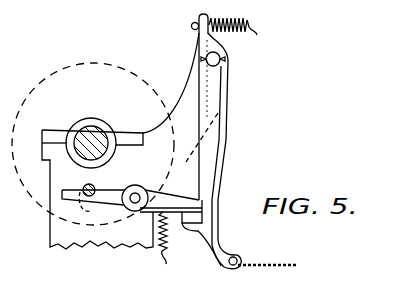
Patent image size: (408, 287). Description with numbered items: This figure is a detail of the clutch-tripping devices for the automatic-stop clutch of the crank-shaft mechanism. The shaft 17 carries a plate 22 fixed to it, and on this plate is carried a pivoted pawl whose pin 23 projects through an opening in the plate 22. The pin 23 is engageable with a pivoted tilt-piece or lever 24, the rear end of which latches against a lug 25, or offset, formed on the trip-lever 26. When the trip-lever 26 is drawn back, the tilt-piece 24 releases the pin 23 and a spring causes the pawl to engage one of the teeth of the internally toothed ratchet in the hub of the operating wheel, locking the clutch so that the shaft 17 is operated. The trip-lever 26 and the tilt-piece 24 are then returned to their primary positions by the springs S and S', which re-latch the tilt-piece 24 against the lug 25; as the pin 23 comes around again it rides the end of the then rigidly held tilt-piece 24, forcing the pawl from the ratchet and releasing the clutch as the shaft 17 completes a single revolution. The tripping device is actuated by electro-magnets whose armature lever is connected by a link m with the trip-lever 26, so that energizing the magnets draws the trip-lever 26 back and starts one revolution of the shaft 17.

The shaft 17 is at (80, 130).
The plate 22 is at (84, 67).
The pin 23 is at (95, 188).
The tilt-piece 24 is at (113, 206).
The lug 25 is at (200, 197).
The trip-lever 26 is at (214, 148).
The spring S is at (235, 36).
The spring S' is at (170, 244).
The link m is at (298, 247).